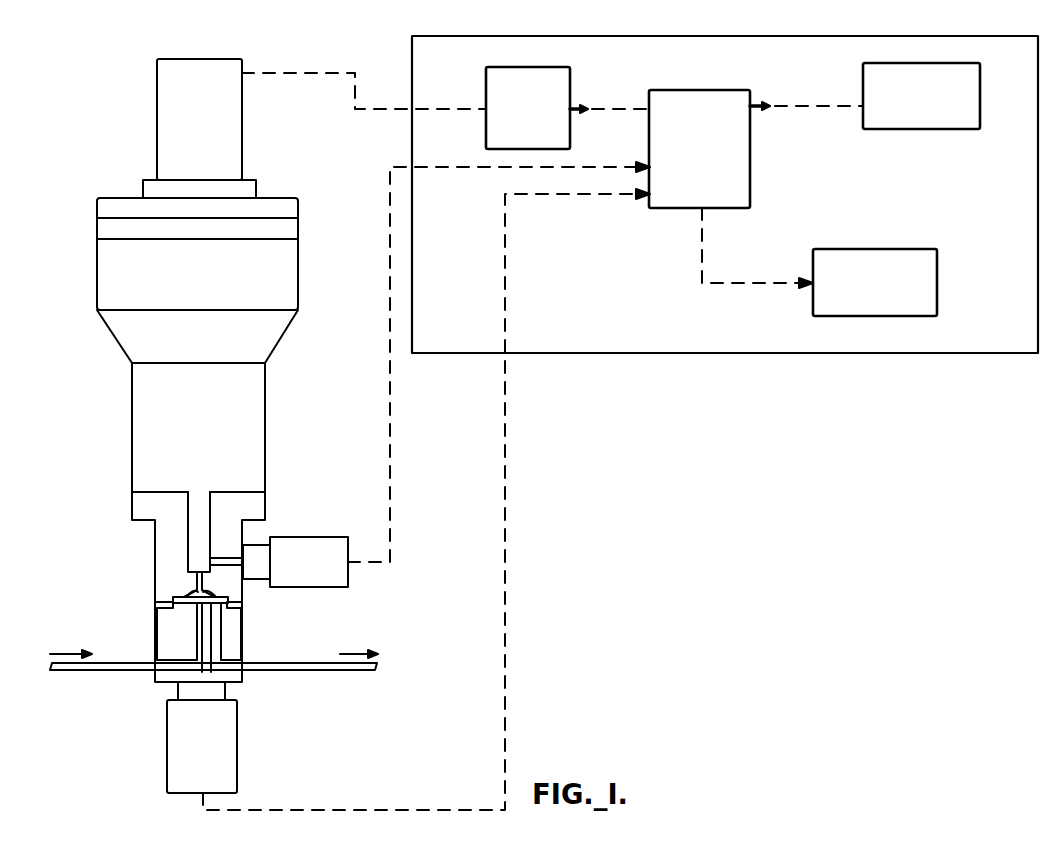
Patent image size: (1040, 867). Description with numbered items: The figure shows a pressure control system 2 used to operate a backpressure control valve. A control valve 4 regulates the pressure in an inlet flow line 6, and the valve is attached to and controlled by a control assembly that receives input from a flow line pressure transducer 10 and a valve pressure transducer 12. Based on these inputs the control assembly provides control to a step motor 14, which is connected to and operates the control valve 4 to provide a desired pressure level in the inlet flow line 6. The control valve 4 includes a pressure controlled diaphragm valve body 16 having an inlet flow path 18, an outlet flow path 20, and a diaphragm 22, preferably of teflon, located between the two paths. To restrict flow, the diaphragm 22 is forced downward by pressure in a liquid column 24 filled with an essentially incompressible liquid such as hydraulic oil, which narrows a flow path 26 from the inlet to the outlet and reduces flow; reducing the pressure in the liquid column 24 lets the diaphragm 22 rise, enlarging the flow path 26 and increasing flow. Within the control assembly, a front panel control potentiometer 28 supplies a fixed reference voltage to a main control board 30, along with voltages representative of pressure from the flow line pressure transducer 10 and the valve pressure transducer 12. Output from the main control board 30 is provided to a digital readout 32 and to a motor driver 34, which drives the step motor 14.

The pressure control system 2 is at (606, 429).
The control valve 4 is at (97, 357).
The inlet flow line 6 is at (97, 672).
The flow line pressure transducer 10 is at (238, 719).
The valve pressure transducer 12 is at (335, 537).
The step motor 14 is at (242, 122).
The pressure controlled diaphragm valve body 16 is at (157, 621).
The inlet flow path 18 is at (197, 647).
The outlet flow path 20 is at (224, 640).
The diaphragm 22 is at (185, 598).
The liquid column 24 is at (197, 544).
The flow path 26 is at (225, 596).
The front panel control potentiometer 28 is at (970, 63).
The main control board 30 is at (735, 90).
The digital readout 32 is at (921, 249).
The motor driver 34 is at (572, 81).